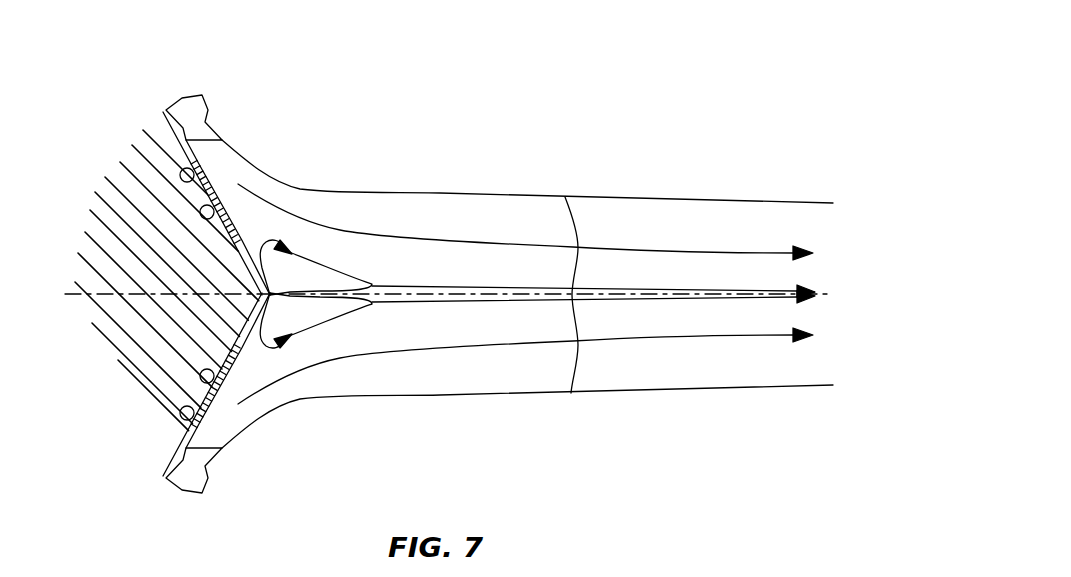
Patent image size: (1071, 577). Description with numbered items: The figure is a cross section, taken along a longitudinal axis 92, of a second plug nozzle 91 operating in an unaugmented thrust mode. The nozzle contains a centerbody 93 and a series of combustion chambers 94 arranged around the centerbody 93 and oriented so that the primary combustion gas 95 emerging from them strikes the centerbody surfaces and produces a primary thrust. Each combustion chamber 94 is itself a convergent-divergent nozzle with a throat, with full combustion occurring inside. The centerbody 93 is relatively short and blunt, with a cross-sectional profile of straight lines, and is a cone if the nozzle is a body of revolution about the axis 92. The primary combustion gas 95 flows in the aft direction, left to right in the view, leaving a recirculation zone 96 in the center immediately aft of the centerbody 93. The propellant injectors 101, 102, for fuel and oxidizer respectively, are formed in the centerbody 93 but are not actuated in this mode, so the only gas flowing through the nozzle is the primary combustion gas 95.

The plug nozzle 91 is at (562, 52).
The longitudinal axis 92 is at (823, 293).
The centerbody 93 is at (252, 243).
The combustion chambers 94 is at (197, 110).
The primary combustion gas 95 is at (578, 248).
The recirculation zone 96 is at (313, 278).
The fuel injector 101 is at (180, 174).
The oxidizer injector 102 is at (200, 213).